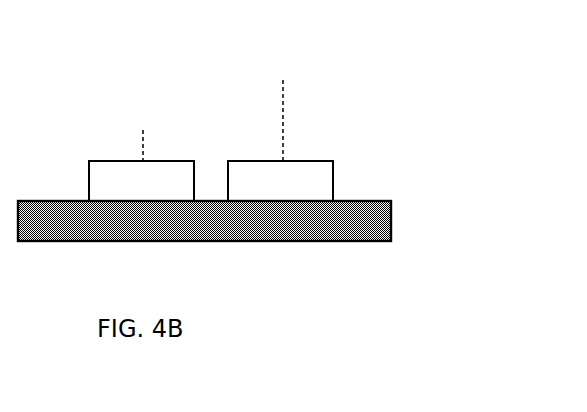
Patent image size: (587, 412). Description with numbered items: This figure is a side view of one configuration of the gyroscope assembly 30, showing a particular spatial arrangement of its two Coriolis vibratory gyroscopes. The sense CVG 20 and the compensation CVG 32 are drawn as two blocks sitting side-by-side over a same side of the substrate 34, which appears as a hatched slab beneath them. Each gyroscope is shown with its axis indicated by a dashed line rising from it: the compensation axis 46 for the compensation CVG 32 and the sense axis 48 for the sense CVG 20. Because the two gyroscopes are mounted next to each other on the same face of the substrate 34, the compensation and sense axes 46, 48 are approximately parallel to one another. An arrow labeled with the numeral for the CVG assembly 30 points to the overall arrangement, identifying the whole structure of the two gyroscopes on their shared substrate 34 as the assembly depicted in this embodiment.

The sense CVG 20 is at (117, 159).
The compensation CVG 32 is at (295, 162).
The substrate 34 is at (77, 247).
The compensation axis 46 is at (147, 144).
The sense axis 48 is at (288, 108).
The gyroscope assembly 30 is at (314, 298).